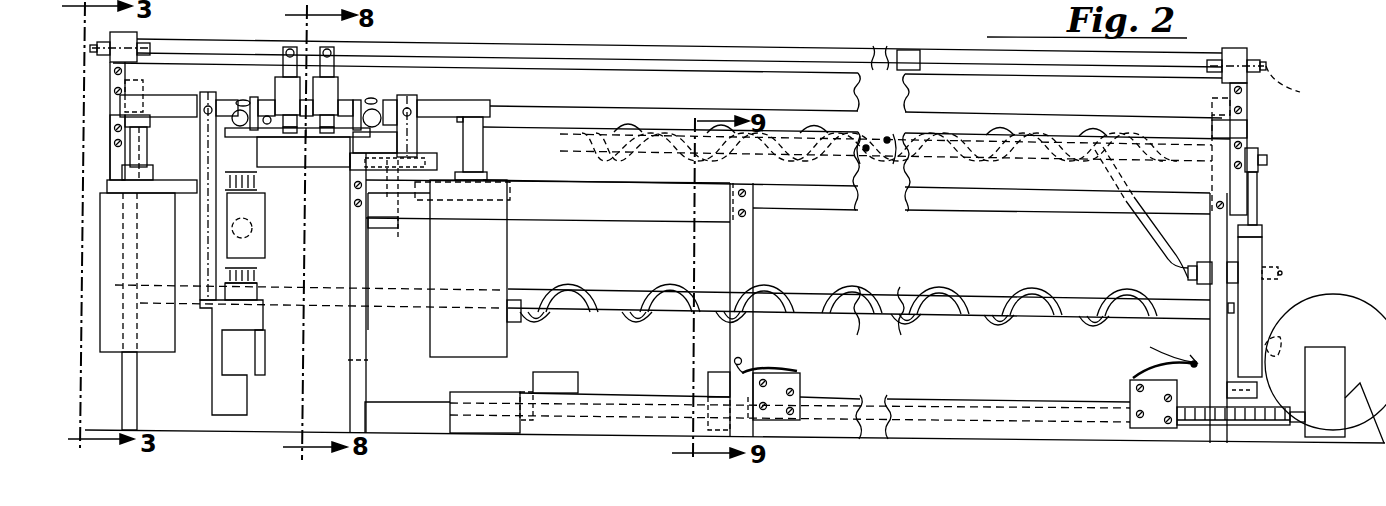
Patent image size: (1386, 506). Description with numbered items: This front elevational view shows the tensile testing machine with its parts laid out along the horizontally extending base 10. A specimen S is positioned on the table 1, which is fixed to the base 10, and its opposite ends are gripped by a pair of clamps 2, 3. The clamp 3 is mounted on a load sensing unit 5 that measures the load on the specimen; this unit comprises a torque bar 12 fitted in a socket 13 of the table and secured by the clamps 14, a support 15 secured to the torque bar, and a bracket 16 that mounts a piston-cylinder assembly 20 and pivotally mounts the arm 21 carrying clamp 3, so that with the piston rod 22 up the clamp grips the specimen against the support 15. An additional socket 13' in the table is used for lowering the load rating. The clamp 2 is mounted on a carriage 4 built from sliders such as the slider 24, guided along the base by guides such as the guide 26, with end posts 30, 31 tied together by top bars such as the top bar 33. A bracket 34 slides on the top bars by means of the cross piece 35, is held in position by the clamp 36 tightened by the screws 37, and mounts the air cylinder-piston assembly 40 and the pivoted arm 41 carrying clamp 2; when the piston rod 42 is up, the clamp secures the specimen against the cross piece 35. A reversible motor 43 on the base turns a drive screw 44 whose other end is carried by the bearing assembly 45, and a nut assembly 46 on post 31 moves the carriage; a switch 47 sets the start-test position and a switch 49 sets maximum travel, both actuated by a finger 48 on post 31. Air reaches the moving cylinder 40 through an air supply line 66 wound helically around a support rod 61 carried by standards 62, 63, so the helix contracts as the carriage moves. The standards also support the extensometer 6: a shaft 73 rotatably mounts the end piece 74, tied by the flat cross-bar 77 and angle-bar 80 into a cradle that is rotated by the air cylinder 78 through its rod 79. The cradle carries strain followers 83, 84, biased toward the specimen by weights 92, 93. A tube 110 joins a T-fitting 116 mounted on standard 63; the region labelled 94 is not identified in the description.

The table 1 is at (332, 273).
The clamp 2 is at (378, 96).
The clamp 3 is at (240, 92).
The carriage 4 is at (560, 175).
The load sensing unit 5 is at (208, 163).
The extensometer 6 is at (512, 44).
The base 10 is at (584, 456).
The torque bar 12 is at (258, 241).
The socket 13 is at (268, 215).
The additional socket 13' is at (278, 352).
The clamps 14 is at (247, 293).
The support 15 is at (222, 393).
The bracket 16 is at (201, 131).
The piston-cylinder assembly 20 is at (171, 251).
The arm 21 is at (182, 98).
The piston rod 22 is at (127, 133).
The slider 24 is at (420, 417).
The guide 26 is at (487, 416).
The end post 30 is at (366, 322).
The end post 31 is at (746, 249).
The top bar 33 is at (552, 210).
The bracket 34 is at (410, 138).
The cross piece 35 is at (428, 163).
The clamp 36 is at (399, 245).
The screws 37 is at (356, 190).
The air cylinder-piston assembly 40 is at (483, 263).
The arm 41 is at (440, 108).
The piston rod 42 is at (476, 145).
The motor 43 is at (1346, 312).
The drive screw 44 is at (942, 420).
The bearing assembly 45 is at (562, 380).
The nut assembly 46 is at (718, 383).
The switch 47 is at (802, 384).
The finger 48 is at (745, 360).
The switch 49 is at (1130, 393).
The support rod 61 is at (983, 303).
The standard 62 is at (135, 384).
The standard 63 is at (1257, 211).
The air supply line 66 is at (1030, 293).
The shaft 73 is at (870, 132).
The end piece 74 is at (120, 107).
The flat cross-bar 77 is at (656, 82).
The air cylinder 78 is at (1250, 254).
The rod 79 is at (1252, 224).
The angle-bar 80 is at (725, 50).
The strain follower 83 is at (286, 133).
The strain follower 84 is at (331, 133).
The weight 92 is at (280, 92).
The weight 93 is at (333, 93).
The coupling 94 is at (912, 55).
The tube 110 is at (655, 160).
The T-fitting 116 is at (1196, 262).
The specimen S is at (307, 140).